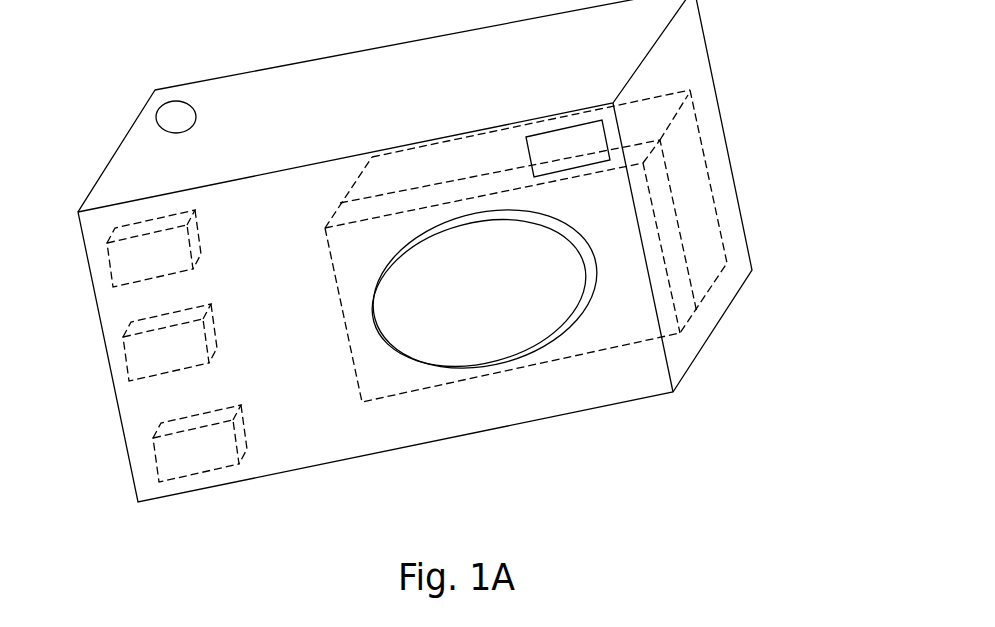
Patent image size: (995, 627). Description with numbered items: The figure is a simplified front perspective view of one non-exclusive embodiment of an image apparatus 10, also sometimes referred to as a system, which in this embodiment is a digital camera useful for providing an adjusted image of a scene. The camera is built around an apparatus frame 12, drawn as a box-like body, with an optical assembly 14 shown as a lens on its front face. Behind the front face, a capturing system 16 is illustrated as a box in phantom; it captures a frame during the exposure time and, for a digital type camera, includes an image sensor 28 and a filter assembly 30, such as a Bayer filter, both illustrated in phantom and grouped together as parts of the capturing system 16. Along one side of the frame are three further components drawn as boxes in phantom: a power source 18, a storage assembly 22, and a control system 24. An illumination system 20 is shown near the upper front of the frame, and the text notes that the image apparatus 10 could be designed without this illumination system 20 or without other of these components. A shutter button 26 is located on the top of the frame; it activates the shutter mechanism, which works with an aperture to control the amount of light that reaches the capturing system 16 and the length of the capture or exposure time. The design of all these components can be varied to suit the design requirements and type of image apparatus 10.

The image apparatus 10 is at (157, 80).
The apparatus frame 12 is at (323, 78).
The optical assembly 14 is at (552, 343).
The capturing system 16 is at (790, 302).
The power source 18 is at (172, 452).
The illumination system 20 is at (602, 121).
The storage assembly 22 is at (143, 360).
The control system 24 is at (130, 262).
The shutter button 26 is at (176, 117).
The image sensor 28 is at (705, 278).
The filter assembly 30 is at (687, 313).